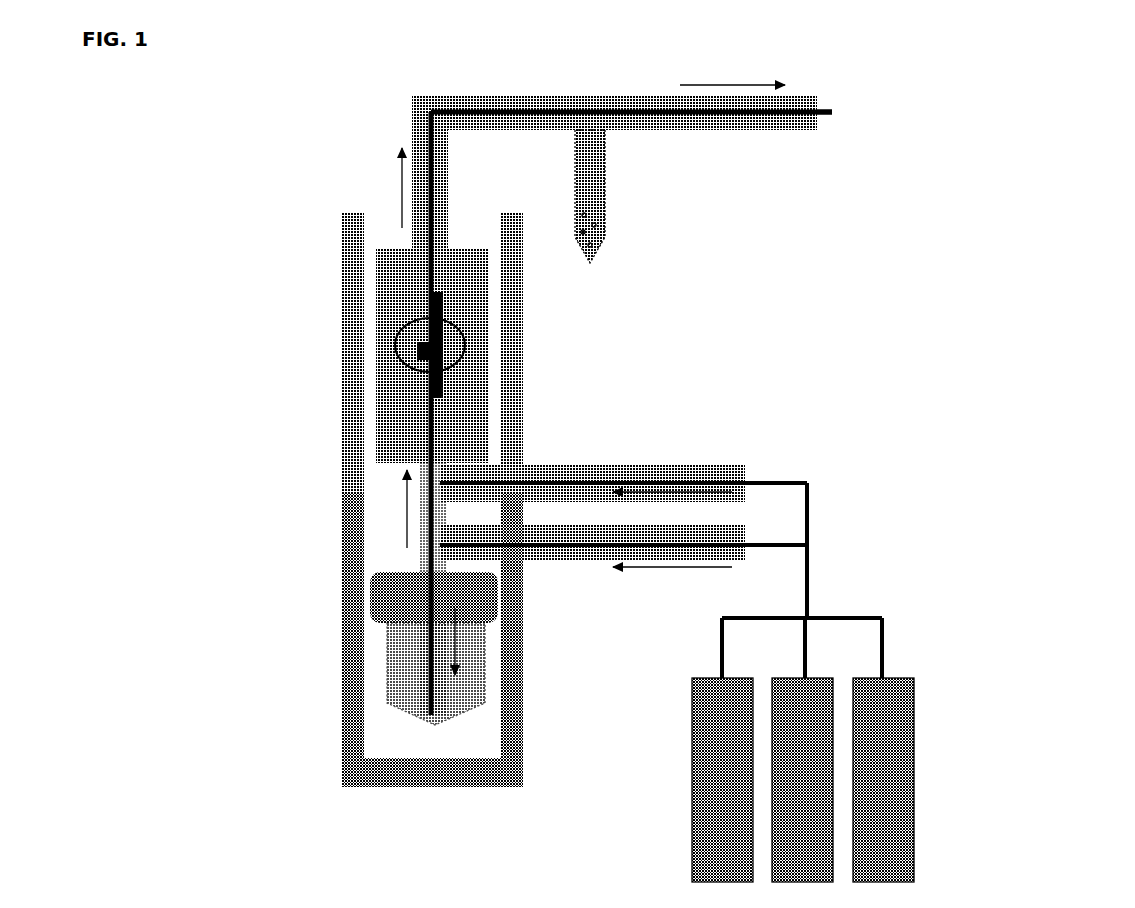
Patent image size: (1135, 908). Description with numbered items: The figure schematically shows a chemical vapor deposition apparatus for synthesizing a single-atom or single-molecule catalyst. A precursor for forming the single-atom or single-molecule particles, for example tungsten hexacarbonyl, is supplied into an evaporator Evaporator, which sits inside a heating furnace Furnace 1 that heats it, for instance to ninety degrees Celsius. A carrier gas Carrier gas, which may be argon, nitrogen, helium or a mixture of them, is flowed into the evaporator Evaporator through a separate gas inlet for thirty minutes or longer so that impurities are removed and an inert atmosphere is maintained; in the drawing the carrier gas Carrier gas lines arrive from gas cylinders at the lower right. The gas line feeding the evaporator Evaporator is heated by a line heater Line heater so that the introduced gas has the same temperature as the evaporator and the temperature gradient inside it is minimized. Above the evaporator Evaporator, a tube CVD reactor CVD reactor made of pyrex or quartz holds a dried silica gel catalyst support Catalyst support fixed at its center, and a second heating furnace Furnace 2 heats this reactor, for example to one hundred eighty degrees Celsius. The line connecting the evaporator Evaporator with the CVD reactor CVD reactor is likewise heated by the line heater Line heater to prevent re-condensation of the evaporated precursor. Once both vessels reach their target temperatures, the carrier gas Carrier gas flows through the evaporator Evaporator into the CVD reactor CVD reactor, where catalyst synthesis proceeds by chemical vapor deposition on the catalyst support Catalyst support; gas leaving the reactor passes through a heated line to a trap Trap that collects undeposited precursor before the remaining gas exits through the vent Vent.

The heating furnace Furnace 2 is at (338, 405).
The heating furnace Furnace 1 is at (340, 617).
The line heater Line heater is at (658, 130).
The vent Vent is at (802, 132).
The carrier gas Carrier gas is at (661, 562).
The trap Trap is at (589, 196).
The element CVD reactor is at (417, 308).
The catalyst support Catalyst support is at (417, 352).
The evaporator Evaporator is at (385, 663).